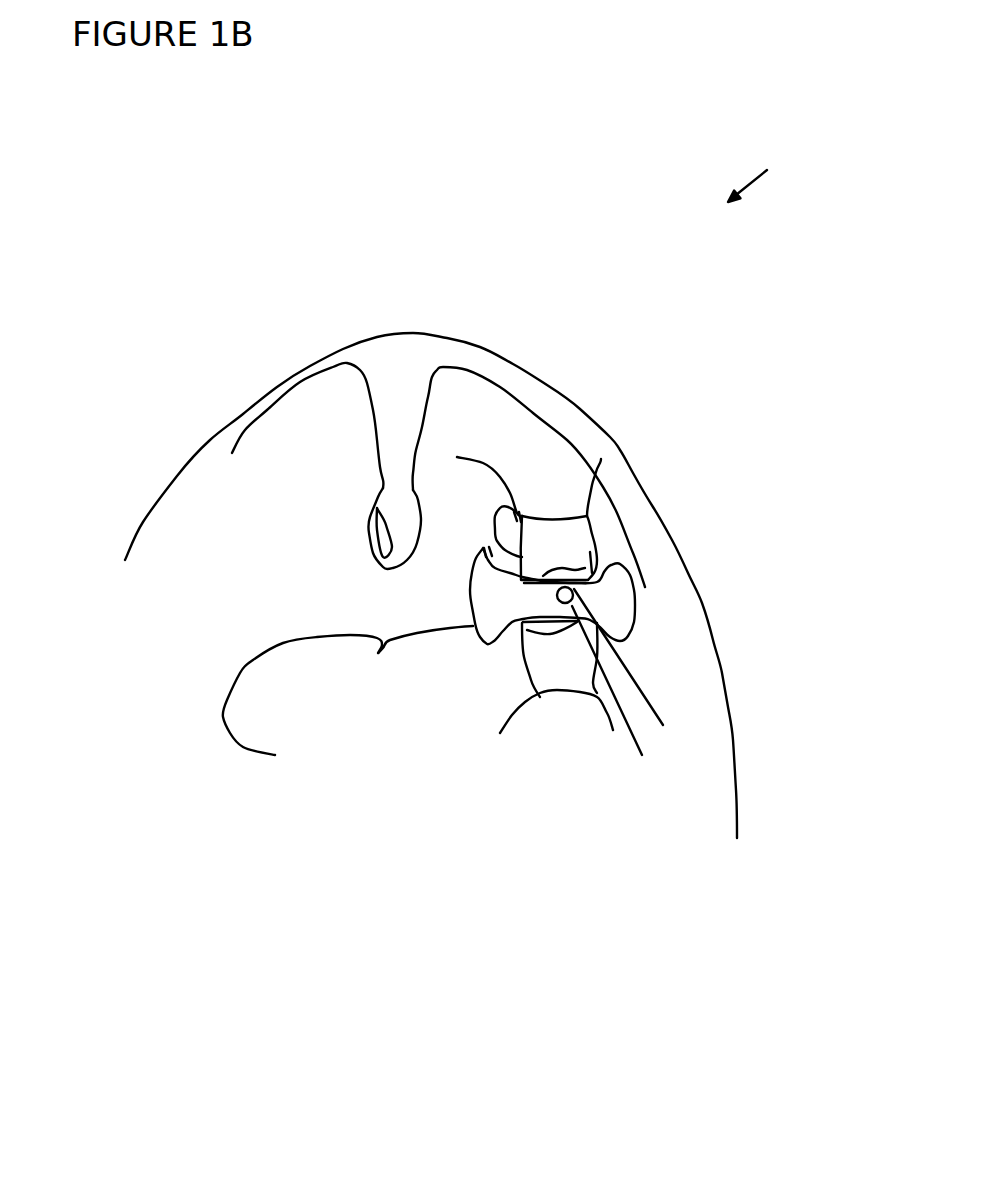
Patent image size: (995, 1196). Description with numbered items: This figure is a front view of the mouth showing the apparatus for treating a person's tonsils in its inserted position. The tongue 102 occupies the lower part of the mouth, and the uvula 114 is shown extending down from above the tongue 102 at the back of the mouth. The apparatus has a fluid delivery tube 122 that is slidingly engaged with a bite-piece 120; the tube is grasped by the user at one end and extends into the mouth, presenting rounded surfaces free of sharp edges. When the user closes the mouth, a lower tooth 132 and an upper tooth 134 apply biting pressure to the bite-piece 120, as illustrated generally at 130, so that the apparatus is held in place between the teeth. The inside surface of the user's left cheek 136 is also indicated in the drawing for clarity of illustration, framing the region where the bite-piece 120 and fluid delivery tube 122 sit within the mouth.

The tongue 102 is at (267, 707).
The uvula 114 is at (393, 505).
The bite-piece 120 is at (502, 600).
The fluid delivery tube 122 is at (622, 683).
The biting pressure applied to the bite-piece 130 is at (817, 150).
The lower tooth 132 is at (563, 653).
The upper tooth 134 is at (560, 542).
The inside surface of the user's left cheek 136 is at (668, 604).